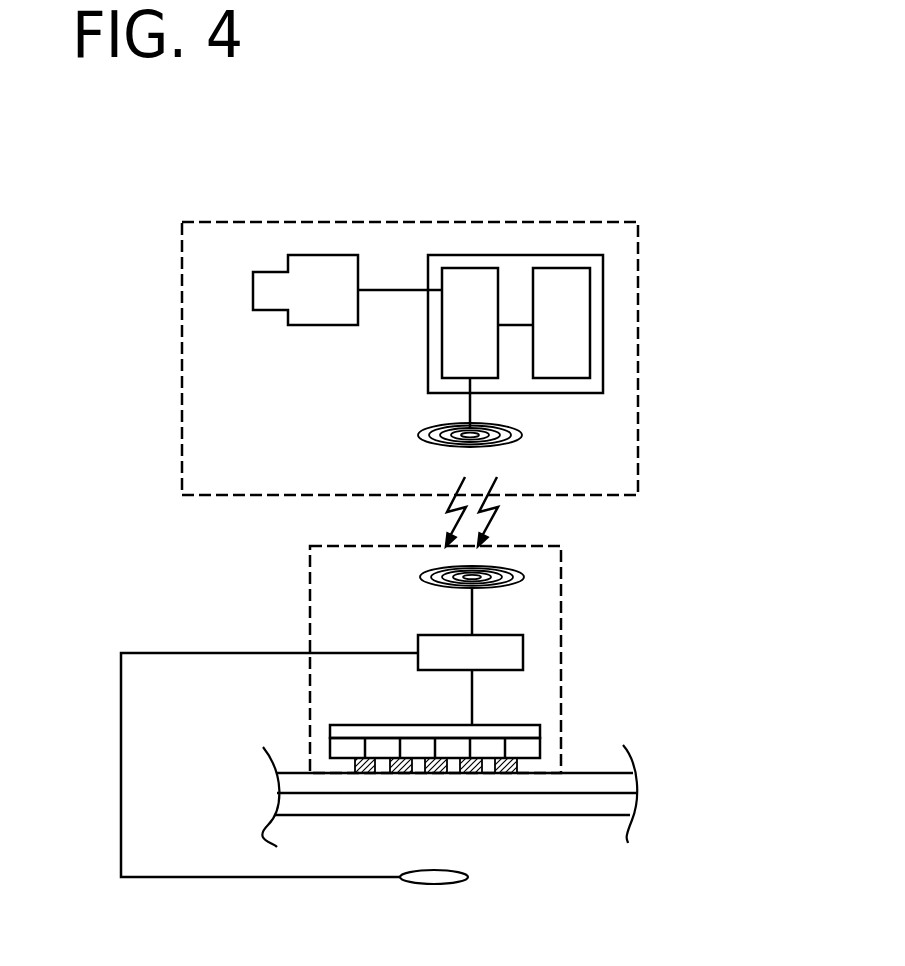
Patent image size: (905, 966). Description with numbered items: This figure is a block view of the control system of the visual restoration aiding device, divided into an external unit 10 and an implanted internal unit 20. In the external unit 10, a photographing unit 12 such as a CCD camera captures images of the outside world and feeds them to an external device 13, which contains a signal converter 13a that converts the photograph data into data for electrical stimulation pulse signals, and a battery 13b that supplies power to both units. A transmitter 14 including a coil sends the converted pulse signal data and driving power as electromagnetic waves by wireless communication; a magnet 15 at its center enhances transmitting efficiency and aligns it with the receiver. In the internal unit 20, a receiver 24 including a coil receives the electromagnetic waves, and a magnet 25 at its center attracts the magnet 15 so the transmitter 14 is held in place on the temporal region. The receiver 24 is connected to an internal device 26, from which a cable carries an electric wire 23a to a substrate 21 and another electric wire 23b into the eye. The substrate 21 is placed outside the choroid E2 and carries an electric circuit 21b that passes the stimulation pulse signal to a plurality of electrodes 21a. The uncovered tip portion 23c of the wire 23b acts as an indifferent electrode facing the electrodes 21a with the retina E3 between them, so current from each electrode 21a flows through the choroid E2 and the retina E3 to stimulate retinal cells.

The external unit 10 is at (393, 222).
The photographing unit 12 is at (253, 290).
The external device 13 is at (605, 297).
The signal converter 13a is at (478, 268).
The battery 13b is at (570, 268).
The transmitter 14 is at (513, 428).
The magnet 15 is at (453, 423).
The internal unit 20 is at (308, 628).
The substrate 21 is at (520, 724).
The electrodes 21a is at (352, 770).
The electric circuit 21b is at (328, 729).
The electric wire 23a is at (473, 700).
The electric wire 23b is at (343, 877).
The tip portion 23c is at (468, 878).
The receiver 24 is at (523, 575).
The magnet 25 is at (440, 570).
The internal device 26 is at (523, 640).
The choroid E2 is at (633, 778).
The retina E3 is at (632, 802).